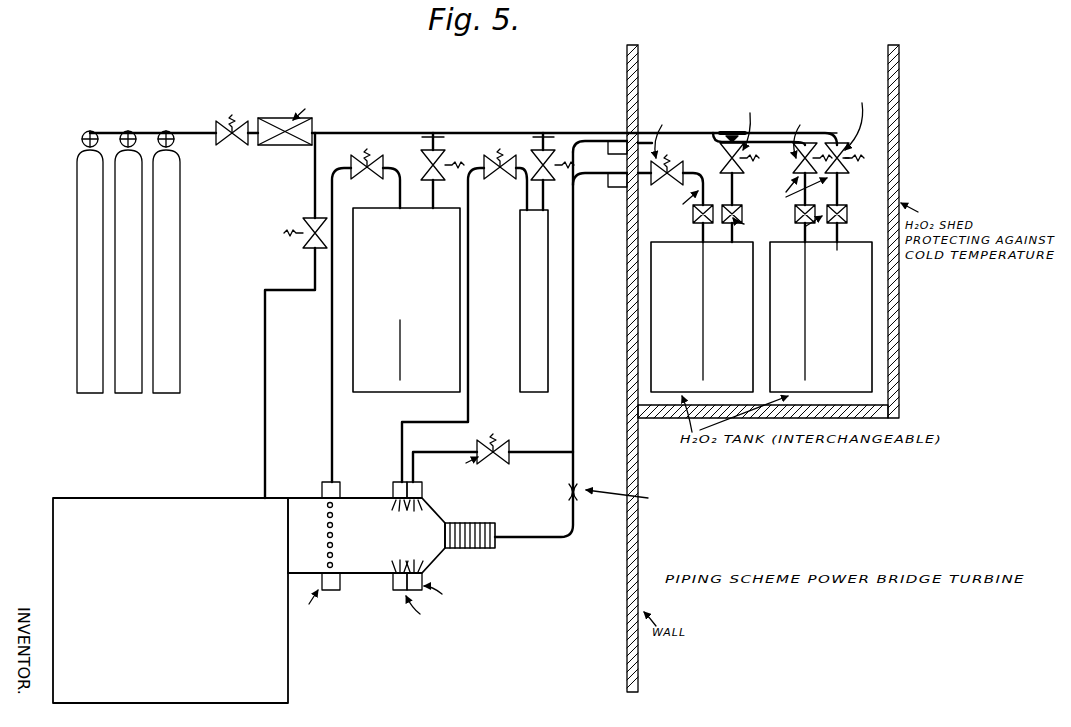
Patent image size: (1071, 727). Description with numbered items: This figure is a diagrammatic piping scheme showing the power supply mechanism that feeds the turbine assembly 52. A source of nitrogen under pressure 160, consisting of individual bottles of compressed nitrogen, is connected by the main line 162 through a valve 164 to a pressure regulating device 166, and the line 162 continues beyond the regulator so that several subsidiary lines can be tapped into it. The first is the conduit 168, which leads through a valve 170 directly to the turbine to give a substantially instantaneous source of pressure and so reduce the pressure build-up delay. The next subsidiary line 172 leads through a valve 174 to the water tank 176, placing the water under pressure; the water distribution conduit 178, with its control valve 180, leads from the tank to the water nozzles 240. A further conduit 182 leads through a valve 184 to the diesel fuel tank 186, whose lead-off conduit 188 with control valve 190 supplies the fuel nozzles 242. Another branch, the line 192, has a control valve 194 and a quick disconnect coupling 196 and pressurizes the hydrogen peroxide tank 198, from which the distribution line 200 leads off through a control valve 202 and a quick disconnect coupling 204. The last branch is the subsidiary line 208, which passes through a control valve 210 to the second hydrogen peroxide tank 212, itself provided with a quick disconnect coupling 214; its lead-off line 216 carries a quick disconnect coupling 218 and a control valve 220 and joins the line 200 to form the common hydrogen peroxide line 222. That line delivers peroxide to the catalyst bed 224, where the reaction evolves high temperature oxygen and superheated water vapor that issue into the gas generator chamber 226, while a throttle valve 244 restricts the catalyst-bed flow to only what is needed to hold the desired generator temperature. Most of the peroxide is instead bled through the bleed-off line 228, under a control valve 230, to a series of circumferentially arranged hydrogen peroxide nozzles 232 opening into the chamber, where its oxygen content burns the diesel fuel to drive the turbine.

The turbine assembly 52 is at (182, 545).
The source of nitrogen under pressure 160 is at (67, 243).
The main nitrogen line 162 is at (174, 130).
The valve 164 is at (219, 121).
The pressure regulating device 166 is at (290, 143).
The nitrogen conduit 168 is at (264, 325).
The valve 170 is at (303, 247).
The water tank pressurizing line 172 is at (403, 152).
The valve 174 is at (440, 150).
The water tank 176 is at (418, 312).
The water distribution conduit 178 is at (330, 345).
The water control valve 180 is at (381, 163).
The fuel tank pressurizing conduit 182 is at (524, 141).
The valve 184 is at (546, 150).
The diesel fuel tank 186 is at (556, 282).
The diesel fuel lead-off conduit 188 is at (470, 269).
The fuel control valve 190 is at (488, 163).
The hydrogen peroxide tank pressurizing line 192 is at (698, 120).
The control valve 194 is at (730, 170).
The quick disconnect coupling 196 is at (735, 228).
The hydrogen peroxide tank 198 is at (688, 334).
The hydrogen peroxide distribution line 200 is at (596, 175).
The control valve 202 is at (627, 206).
The quick disconnect coupling 204 is at (696, 228).
The subsidiary nitrogen line 208 is at (850, 140).
The control valve 210 is at (848, 165).
The second hydrogen peroxide tank 212 is at (848, 324).
The quick disconnect coupling 214 is at (849, 256).
The lead-off line 216 is at (761, 140).
The quick disconnect coupling 218 is at (839, 185).
The control valve 220 is at (794, 173).
The common hydrogen peroxide line 222 is at (575, 370).
The catalyst bed 224 is at (494, 523).
The gas generator chamber 226 is at (395, 529).
The bleed-off line 228 is at (450, 450).
The control valve 230 is at (524, 412).
The hydrogen peroxide nozzles 232 is at (424, 487).
The water nozzles 240 is at (323, 480).
The diesel fuel nozzles 242 is at (394, 480).
The throttle valve 244 is at (581, 497).